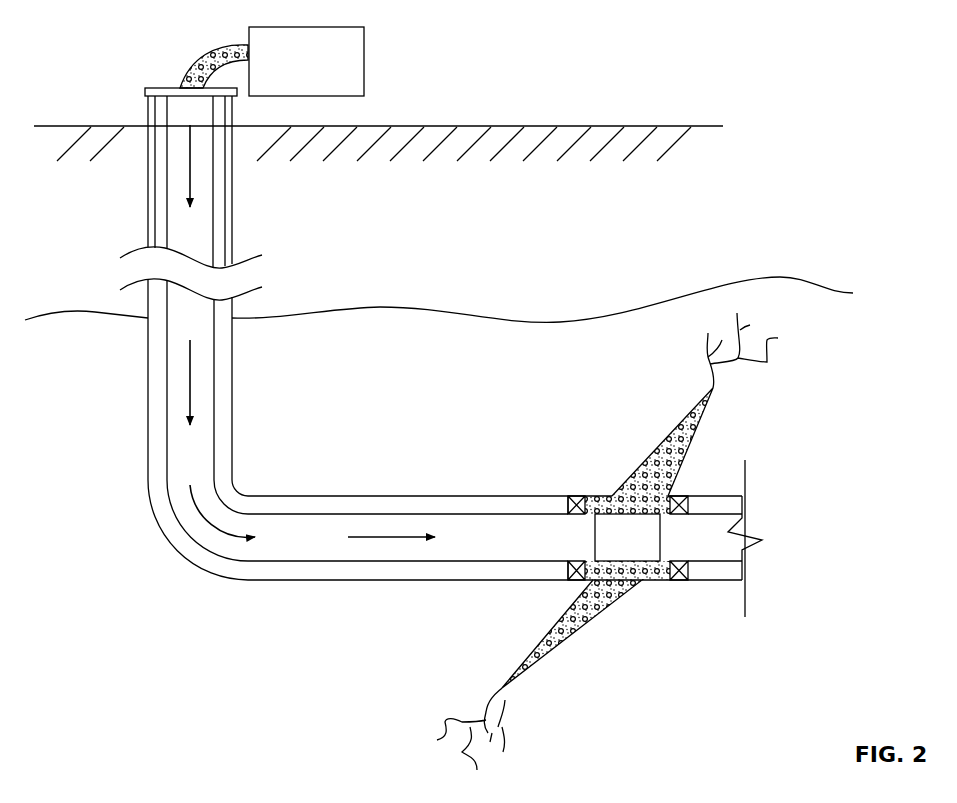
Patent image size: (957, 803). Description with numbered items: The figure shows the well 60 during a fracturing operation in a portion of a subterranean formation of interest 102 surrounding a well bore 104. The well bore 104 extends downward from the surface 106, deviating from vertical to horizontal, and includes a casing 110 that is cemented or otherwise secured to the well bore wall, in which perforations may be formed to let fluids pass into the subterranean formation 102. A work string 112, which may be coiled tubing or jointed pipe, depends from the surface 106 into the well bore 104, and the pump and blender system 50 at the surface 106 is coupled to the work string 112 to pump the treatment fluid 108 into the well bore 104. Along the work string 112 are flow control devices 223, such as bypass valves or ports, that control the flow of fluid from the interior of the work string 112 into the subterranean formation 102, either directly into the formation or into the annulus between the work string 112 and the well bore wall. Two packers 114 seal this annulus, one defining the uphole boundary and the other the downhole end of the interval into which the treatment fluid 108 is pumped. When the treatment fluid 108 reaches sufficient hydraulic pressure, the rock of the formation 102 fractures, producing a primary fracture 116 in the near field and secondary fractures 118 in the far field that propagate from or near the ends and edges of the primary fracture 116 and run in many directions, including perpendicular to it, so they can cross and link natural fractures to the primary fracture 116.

The pump and blender system 50 is at (306, 61).
The well 60 is at (160, 568).
The subterranean formation 102 is at (439, 312).
The well bore 104 is at (157, 203).
The surface 106 is at (542, 126).
The treatment fluid 108 is at (200, 60).
The casing 110 is at (153, 235).
The work string 112 is at (167, 422).
The packers 114 is at (575, 496).
The primary fracture 116 is at (648, 447).
The secondary fractures 118 is at (698, 340).
The flow control devices 223 is at (627, 537).